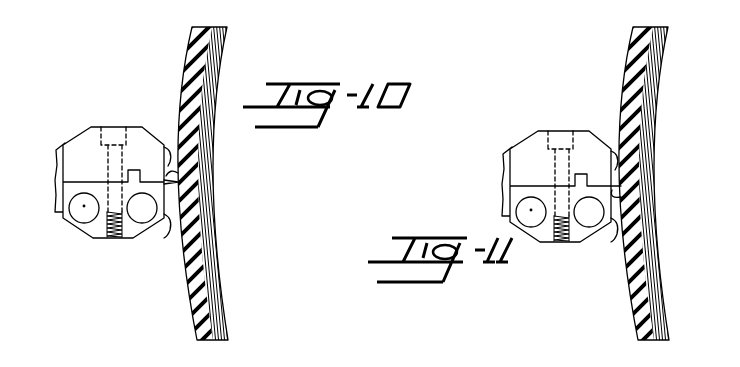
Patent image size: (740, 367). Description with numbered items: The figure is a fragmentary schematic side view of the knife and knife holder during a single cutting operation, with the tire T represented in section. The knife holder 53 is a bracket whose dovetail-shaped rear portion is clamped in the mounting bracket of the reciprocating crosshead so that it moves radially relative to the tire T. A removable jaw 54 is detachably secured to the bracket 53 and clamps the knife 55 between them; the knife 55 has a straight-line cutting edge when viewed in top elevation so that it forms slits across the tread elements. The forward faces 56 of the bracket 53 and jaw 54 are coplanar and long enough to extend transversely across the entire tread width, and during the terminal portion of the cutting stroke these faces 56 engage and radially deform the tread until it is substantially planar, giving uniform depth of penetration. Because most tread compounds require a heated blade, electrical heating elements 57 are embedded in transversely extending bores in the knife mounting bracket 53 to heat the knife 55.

In FIG. 10, the tire T is at (184, 80).
In FIG. 11, the tire T is at (623, 82).
In FIG. 10, the knife holder 53 is at (62, 192).
In FIG. 11, the knife holder 53 is at (510, 196).
In FIG. 10, the removable jaw 54 is at (95, 136).
In FIG. 11, the removable jaw 54 is at (593, 143).
In FIG. 10, the knife 55 is at (168, 172).
In FIG. 11, the knife 55 is at (626, 203).
In FIG. 10, the forward faces 56 is at (170, 147).
In FIG. 11, the forward faces 56 is at (611, 163).
In FIG. 10, the electrical heating elements 57 is at (92, 213).
In FIG. 11, the electrical heating elements 57 is at (540, 214).